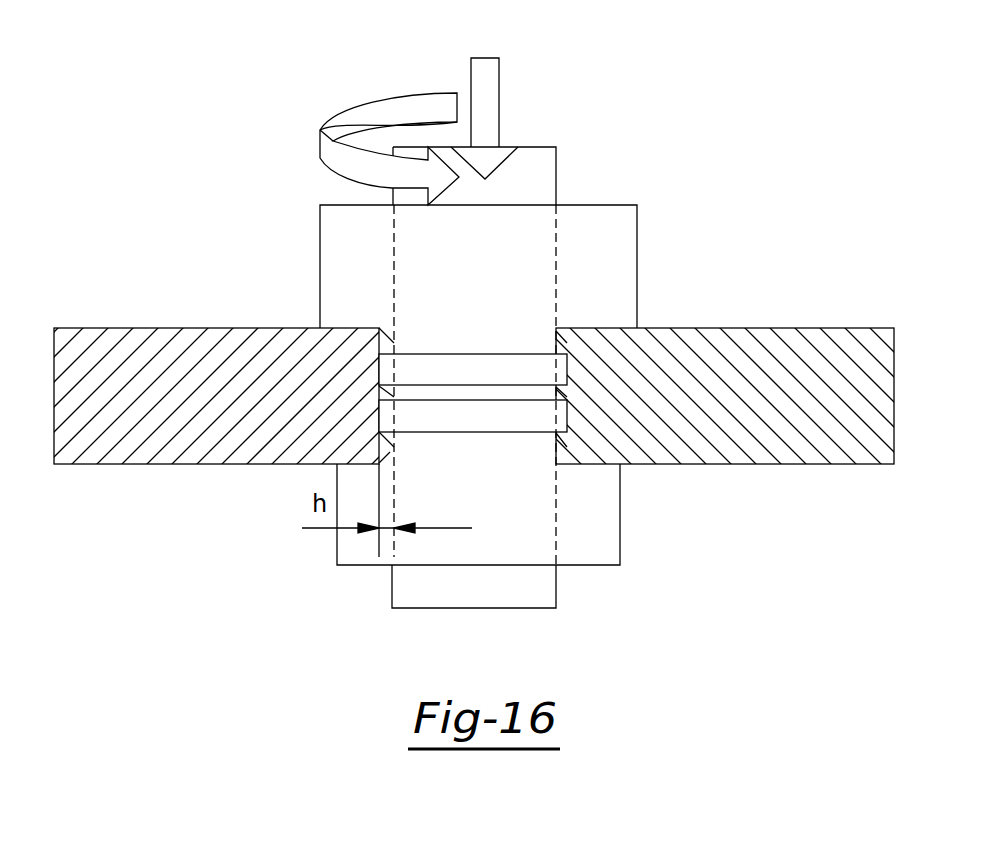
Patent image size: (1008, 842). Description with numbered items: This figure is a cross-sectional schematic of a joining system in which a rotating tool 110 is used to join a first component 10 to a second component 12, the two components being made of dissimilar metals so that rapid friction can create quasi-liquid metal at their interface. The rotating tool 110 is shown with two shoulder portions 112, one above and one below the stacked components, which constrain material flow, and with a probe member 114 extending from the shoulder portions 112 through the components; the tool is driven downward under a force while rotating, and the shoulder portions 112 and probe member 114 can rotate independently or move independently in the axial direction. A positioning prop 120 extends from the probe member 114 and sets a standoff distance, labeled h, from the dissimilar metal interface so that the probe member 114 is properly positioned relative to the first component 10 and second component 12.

The first component 10 is at (102, 327).
The second component 12 is at (810, 327).
The rotating tool 110 is at (599, 182).
The shoulder portions 112 is at (637, 237).
The probe member 114 is at (556, 596).
The positioning prop 120 is at (567, 412).